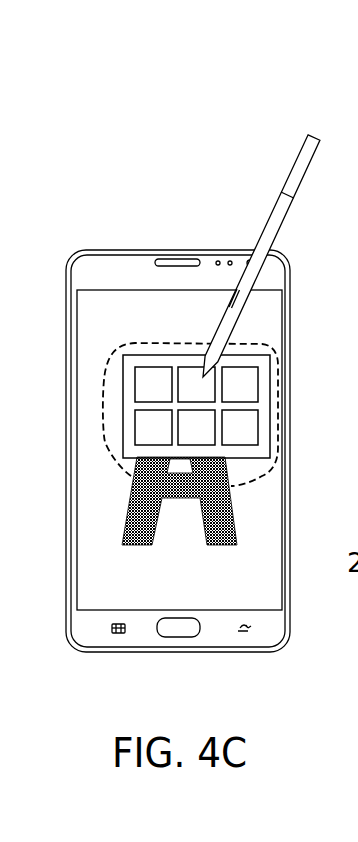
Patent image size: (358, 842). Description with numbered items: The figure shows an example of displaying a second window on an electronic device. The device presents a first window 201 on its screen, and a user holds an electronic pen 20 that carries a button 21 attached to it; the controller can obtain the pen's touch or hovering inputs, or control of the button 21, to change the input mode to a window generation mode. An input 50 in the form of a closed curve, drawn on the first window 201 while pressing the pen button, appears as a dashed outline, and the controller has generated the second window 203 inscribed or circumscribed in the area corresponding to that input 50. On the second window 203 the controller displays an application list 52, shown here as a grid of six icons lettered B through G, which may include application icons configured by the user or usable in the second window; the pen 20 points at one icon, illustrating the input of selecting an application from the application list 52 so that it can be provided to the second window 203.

The electronic pen 20 is at (318, 135).
The button 21 is at (243, 299).
The input 50 is at (106, 386).
The application list 52 is at (125, 437).
The first window 201 is at (90, 563).
The second window 203 is at (274, 408).